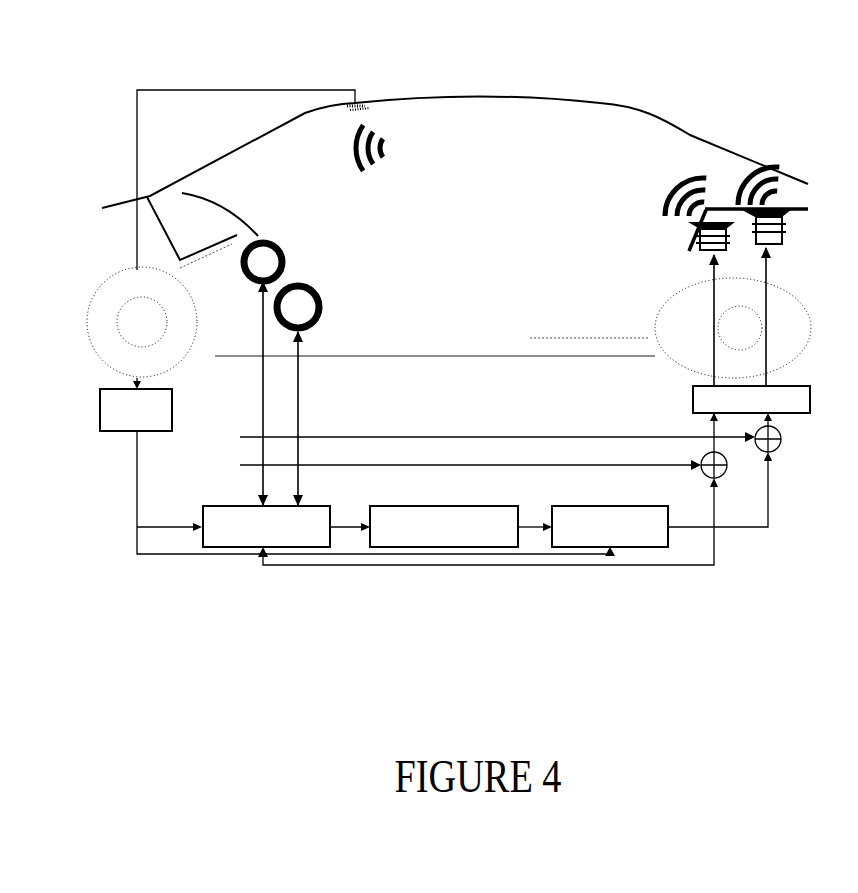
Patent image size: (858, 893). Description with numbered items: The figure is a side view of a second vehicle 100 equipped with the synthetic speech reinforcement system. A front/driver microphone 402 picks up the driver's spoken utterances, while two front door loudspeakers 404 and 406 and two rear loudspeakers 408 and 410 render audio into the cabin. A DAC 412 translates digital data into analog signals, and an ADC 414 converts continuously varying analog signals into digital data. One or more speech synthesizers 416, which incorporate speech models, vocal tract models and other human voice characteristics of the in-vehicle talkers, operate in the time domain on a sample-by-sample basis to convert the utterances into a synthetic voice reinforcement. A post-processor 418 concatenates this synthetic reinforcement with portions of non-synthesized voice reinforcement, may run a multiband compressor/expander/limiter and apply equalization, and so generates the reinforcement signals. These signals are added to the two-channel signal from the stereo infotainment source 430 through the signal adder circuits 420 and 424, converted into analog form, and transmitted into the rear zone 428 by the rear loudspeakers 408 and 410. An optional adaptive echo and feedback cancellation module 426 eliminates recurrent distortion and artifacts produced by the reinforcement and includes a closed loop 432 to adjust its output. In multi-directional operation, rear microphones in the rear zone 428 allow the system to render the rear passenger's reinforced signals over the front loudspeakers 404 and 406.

The vehicle 100 is at (746, 101).
The front/driver microphone 402 is at (372, 104).
The front door loudspeaker 404 is at (274, 241).
The front door loudspeaker 406 is at (306, 337).
The rear loudspeaker 408 is at (814, 207).
The rear loudspeaker 410 is at (708, 282).
The digital to analog converter (DAC) 412 is at (175, 406).
The analog to digital converter (ADC) 414 is at (812, 402).
The speech synthesizer 416 is at (528, 497).
The post-processor 418 is at (655, 505).
The signal adder circuit 420 is at (717, 480).
The signal adder circuit 424 is at (782, 446).
The adaptive echo and feedback cancellation module 426 is at (346, 500).
The rear zone 428 is at (512, 148).
The stereo infotainment source 430 is at (463, 443).
The closed loop 432 is at (660, 588).